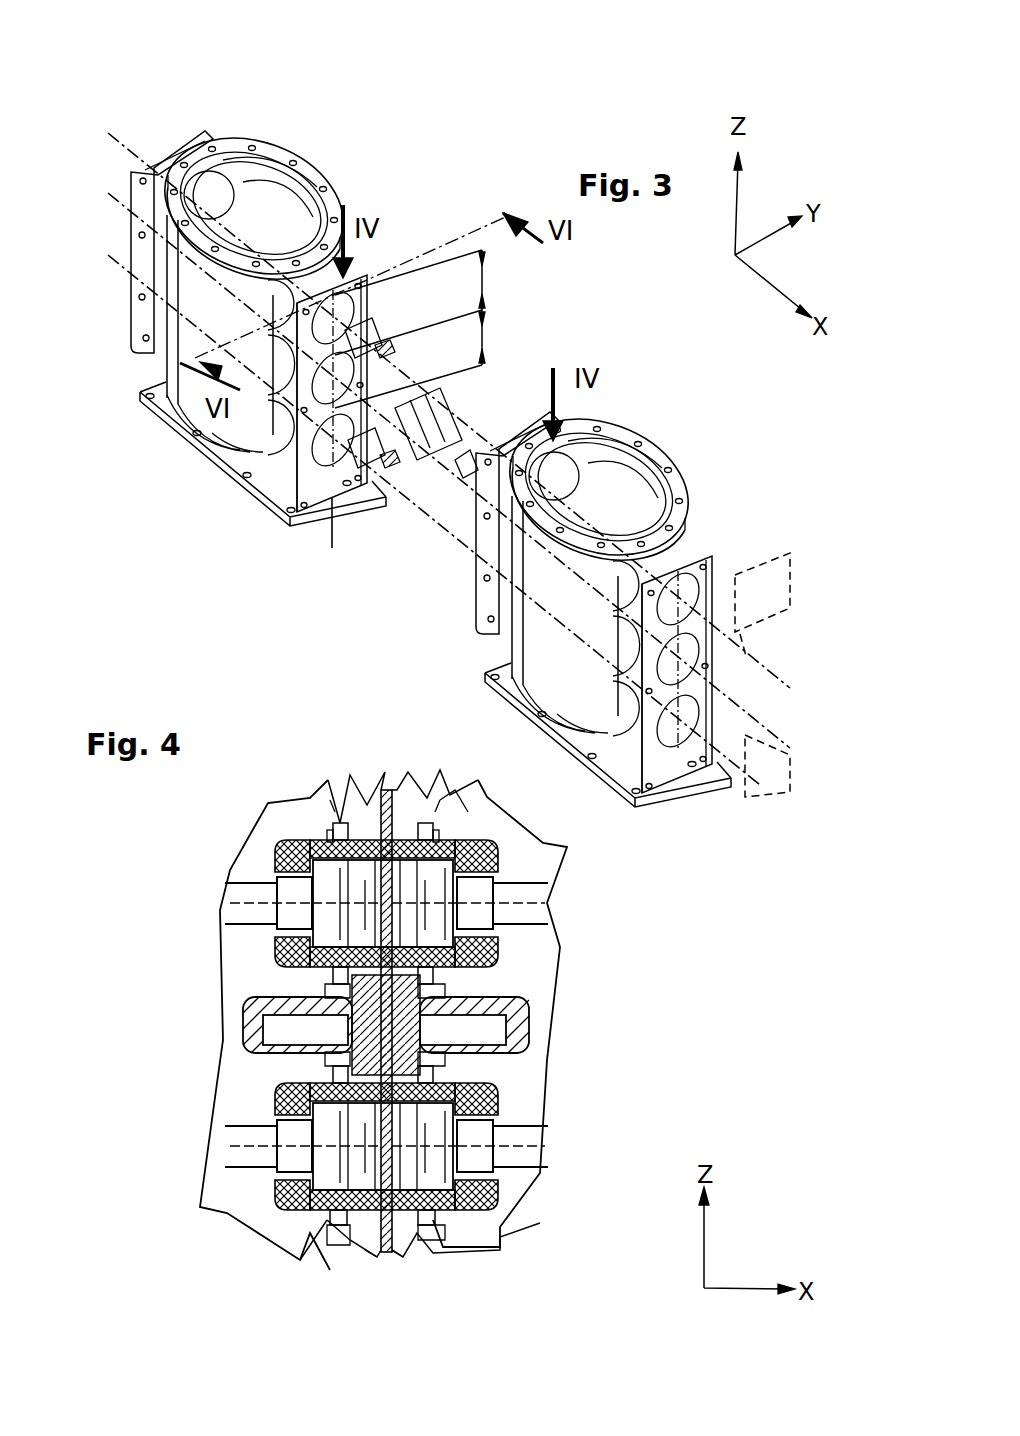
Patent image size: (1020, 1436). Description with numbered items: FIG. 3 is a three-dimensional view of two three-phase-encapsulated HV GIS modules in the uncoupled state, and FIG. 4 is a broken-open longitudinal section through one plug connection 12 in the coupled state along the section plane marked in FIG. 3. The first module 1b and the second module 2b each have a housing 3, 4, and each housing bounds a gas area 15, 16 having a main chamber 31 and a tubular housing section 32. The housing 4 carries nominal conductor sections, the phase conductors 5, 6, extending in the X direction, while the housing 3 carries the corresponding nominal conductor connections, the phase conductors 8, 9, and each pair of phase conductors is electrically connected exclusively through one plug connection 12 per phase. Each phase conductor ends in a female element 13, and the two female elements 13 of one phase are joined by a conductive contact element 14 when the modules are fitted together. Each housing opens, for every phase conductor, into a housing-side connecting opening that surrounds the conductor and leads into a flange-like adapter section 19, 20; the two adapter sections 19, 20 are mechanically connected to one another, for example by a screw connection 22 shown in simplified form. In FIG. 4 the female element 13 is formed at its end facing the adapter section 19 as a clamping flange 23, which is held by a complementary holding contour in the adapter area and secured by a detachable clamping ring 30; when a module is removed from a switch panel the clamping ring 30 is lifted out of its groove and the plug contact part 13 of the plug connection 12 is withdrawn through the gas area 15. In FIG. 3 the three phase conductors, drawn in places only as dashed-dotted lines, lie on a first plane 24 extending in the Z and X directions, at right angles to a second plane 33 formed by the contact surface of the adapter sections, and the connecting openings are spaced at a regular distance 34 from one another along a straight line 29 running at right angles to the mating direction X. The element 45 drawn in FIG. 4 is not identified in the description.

In FIG. 3, the first module 1b is at (183, 455).
In FIG. 3, the second pump housing 2b is at (668, 805).
In FIG. 3, the housing 3 is at (227, 140).
In FIG. 4, the housing 3 is at (243, 1023).
In FIG. 3, the housing 4 is at (683, 497).
In FIG. 4, the housing 4 is at (532, 1018).
In FIG. 4, the phase conductor 5 is at (540, 898).
In FIG. 4, the phase conductor 6 is at (540, 1142).
In FIG. 4, the phase conductor 8 is at (235, 892).
In FIG. 4, the phase conductor 9 is at (232, 1150).
In FIG. 4, the plug connection 12 is at (405, 780).
In FIG. 4, the female element 13 is at (283, 843).
In FIG. 4, the contact element 14 is at (331, 880).
In FIG. 3, the gas area 15 is at (277, 198).
In FIG. 4, the gas area 15 is at (240, 958).
In FIG. 3, the gas area 16 is at (598, 478).
In FIG. 4, the gas area 16 is at (520, 1095).
In FIG. 4, the flange-like adapter section 19 is at (370, 1258).
In FIG. 4, the flange-like adapter section 20 is at (405, 1258).
In FIG. 3, the screw connection 22 is at (500, 390).
In FIG. 4, the clamping flange 23 is at (452, 795).
In FIG. 3, the first plane 24 is at (767, 766).
In FIG. 3, the straight line 29 is at (330, 532).
In FIG. 4, the clamping ring 30 is at (345, 835).
In FIG. 3, the main chamber 31 is at (248, 192).
In FIG. 3, the tubular housing section 32 is at (136, 310).
In FIG. 3, the second plane 33 is at (762, 604).
In FIG. 4, the second plane 33 is at (389, 790).
In FIG. 3, the regular distance 34 is at (490, 345).
In FIG. 4, the rotor lobe 45 is at (290, 1032).